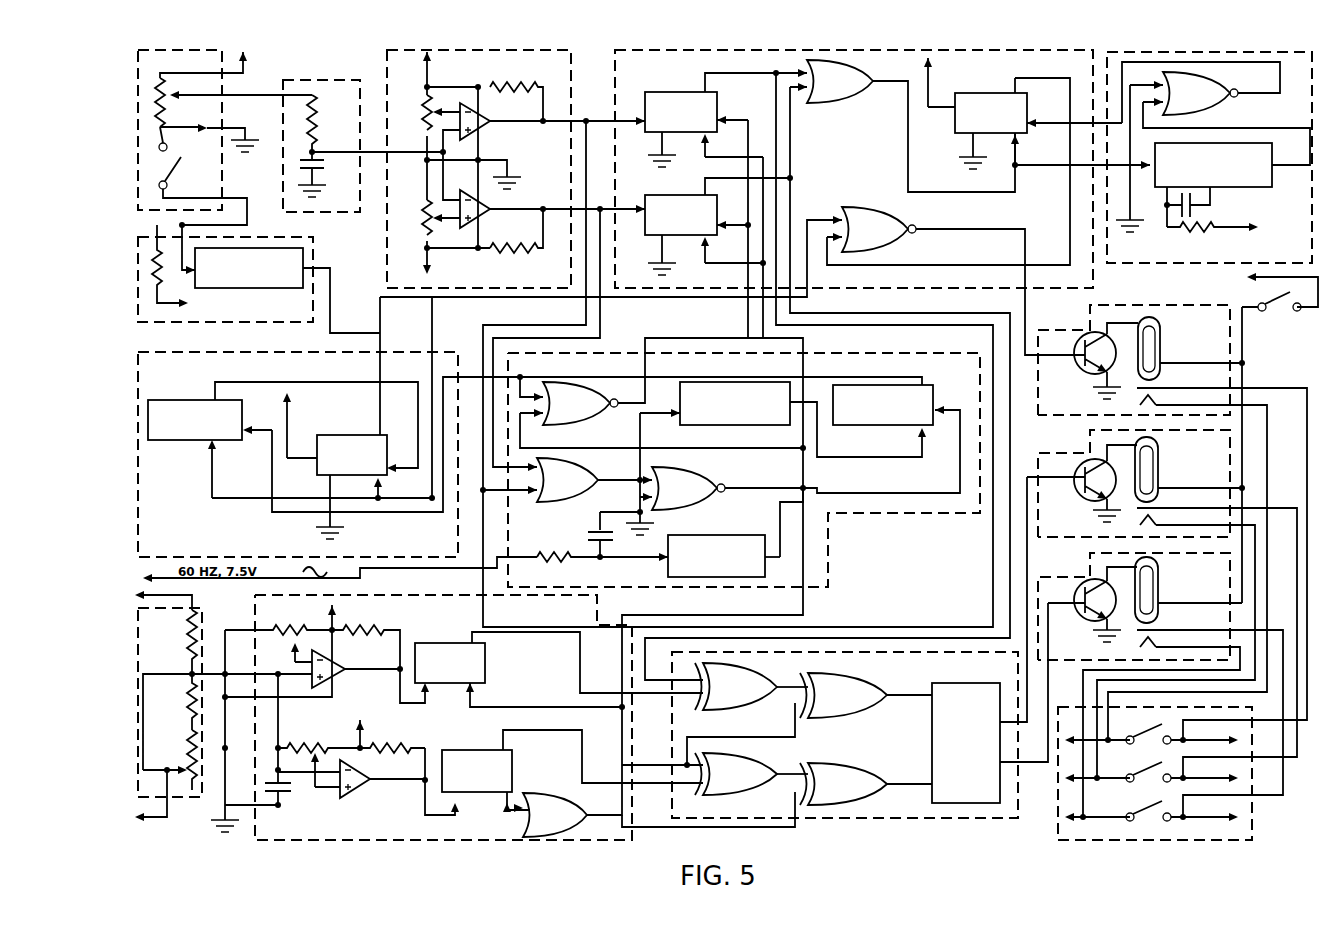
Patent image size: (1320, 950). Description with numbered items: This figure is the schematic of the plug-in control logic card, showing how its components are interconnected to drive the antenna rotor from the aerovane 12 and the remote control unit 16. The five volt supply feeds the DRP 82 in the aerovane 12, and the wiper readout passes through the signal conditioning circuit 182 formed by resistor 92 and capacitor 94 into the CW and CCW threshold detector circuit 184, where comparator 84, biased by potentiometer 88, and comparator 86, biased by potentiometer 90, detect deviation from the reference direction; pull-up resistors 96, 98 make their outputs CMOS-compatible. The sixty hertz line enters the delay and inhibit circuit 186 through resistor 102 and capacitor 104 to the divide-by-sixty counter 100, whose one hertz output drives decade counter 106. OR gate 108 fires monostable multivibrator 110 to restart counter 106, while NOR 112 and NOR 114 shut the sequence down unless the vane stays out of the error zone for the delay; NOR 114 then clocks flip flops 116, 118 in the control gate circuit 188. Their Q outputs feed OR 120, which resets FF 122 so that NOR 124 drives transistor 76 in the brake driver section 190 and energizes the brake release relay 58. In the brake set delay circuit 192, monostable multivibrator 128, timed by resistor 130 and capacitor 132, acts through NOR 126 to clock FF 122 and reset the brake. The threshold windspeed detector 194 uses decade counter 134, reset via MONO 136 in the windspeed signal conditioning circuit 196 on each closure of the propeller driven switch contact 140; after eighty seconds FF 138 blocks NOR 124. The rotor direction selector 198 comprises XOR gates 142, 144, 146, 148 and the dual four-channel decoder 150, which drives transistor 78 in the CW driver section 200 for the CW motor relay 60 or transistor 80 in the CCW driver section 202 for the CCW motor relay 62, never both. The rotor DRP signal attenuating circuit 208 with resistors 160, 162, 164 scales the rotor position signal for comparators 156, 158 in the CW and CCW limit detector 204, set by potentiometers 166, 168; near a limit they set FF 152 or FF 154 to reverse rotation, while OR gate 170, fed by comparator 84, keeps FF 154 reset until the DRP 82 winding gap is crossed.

The aerovane 12 is at (232, 185).
The remote control unit 16 is at (1250, 812).
The brake release relay 58 is at (1160, 355).
The CW motor relay 60 is at (1160, 480).
The CCW motor relay 62 is at (1160, 600).
The transistor 76 is at (1078, 375).
The transistor 78 is at (1078, 497).
The transistor 80 is at (1078, 618).
The DRP 82 is at (148, 90).
The comparator 84 is at (490, 128).
The comparator 86 is at (490, 216).
The potentiometer 88 is at (417, 110).
The potentiometer 90 is at (417, 222).
The resistor 92 is at (318, 115).
The capacitor 94 is at (316, 152).
The pull-up resistor 96 is at (515, 258).
The pull-up resistor 98 is at (515, 85).
The divide-by-60 counter 100 is at (760, 535).
The resistor 102 is at (555, 562).
The capacitor 104 is at (588, 532).
The decade counter 106 is at (883, 425).
The OR gate 108 is at (565, 502).
The monostable multivibrator 110 is at (725, 425).
The NOR gate 112 is at (720, 508).
The NOR gate 114 is at (585, 425).
The flip flop 116 is at (675, 92).
The flip flop 118 is at (672, 195).
The OR gate 120 is at (838, 103).
The flip flop 122 is at (955, 130).
The NOR gate 124 is at (865, 207).
The NOR gate 126 is at (1225, 110).
The monostable multivibrator 128 is at (1258, 187).
The resistor 130 is at (1205, 232).
The capacitor 132 is at (1200, 208).
The decade counter 134 is at (195, 400).
The monostable multivibrator 136 is at (255, 290).
The flip flop 138 is at (340, 435).
The propeller driven switch contact 140 is at (203, 176).
The XOR gate 142 is at (760, 710).
The XOR gate 144 is at (840, 673).
The XOR gate 146 is at (760, 795).
The XOR gate 148 is at (840, 763).
The dual 4-channel decoder 150 is at (940, 683).
The flip flop 152 is at (445, 643).
The flip flop 154 is at (512, 760).
The comparator 156 is at (345, 676).
The comparator 158 is at (370, 787).
The resistor 160 is at (186, 705).
The resistor 162 is at (183, 640).
The resistor 164 is at (186, 752).
The potentiometer 166 is at (303, 622).
The potentiometer 168 is at (325, 728).
The OR gate 170 is at (525, 827).
The signal conditioning circuit 182 is at (295, 214).
The CW and CCW threshold detector circuit 184 is at (383, 237).
The delay and inhibit circuit 186 is at (912, 515).
The control gate circuit 188 is at (930, 290).
The brake driver circuit 190 is at (1075, 330).
The brake set delay circuit 192 is at (1160, 263).
The threshold windspeed detector 194 is at (462, 345).
The windspeed signal conditioning circuit 196 is at (213, 328).
The rotor direction selector 198 is at (905, 818).
The CW driver circuit 200 is at (1085, 453).
The CCW driver circuit 202 is at (1085, 577).
The CW and CCW limit detector 204 is at (448, 598).
The rotor DRP signal attenuating circuit 208 is at (195, 810).